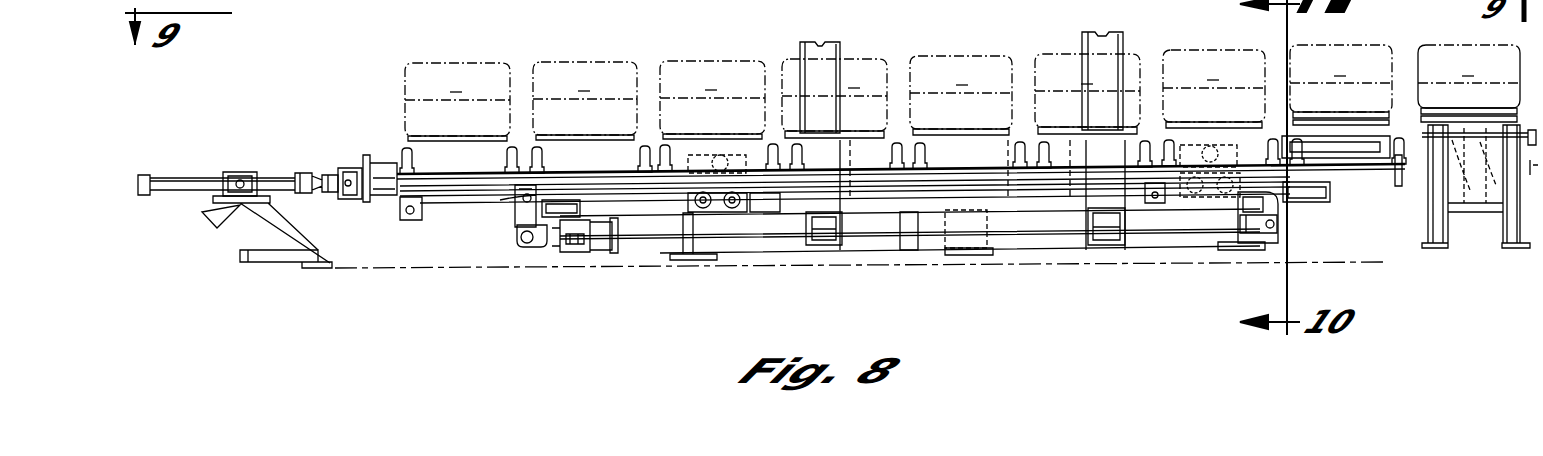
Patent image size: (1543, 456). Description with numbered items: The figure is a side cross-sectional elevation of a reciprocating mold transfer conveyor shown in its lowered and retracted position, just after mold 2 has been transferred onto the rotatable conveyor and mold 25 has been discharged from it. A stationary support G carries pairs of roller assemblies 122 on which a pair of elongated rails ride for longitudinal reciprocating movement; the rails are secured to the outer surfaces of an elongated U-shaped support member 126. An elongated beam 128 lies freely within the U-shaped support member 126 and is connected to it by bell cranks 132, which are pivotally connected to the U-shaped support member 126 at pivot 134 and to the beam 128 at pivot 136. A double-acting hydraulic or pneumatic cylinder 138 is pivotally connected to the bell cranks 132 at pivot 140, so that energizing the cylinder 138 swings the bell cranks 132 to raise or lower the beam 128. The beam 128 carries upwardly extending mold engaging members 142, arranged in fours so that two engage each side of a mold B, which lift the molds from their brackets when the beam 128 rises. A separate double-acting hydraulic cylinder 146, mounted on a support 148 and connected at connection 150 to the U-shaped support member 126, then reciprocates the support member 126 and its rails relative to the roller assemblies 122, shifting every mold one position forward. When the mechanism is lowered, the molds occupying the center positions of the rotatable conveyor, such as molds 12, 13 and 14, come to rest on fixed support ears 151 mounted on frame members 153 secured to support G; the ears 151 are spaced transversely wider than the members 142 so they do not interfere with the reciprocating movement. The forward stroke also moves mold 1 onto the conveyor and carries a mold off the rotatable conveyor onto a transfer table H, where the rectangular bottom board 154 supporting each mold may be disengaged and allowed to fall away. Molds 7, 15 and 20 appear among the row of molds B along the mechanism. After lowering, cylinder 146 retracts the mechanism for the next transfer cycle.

The mold 1 is at (431, 62).
The mold 2 is at (562, 61).
The work station 7 is at (716, 60).
The mold 12 is at (852, 60).
The mold 13 is at (962, 58).
The mold 14 is at (1072, 52).
The work station 15 is at (1206, 50).
The work station 20 is at (1355, 44).
The mold 25 is at (1467, 44).
The roller assemblies 122 is at (690, 200).
The U-shaped support member 126 is at (362, 153).
The elongated beam 128 is at (854, 182).
The bell cranks 132 is at (517, 226).
The pivotal connection 134 is at (514, 207).
The pivotal connection 136 is at (400, 214).
The double-acting cylinder 138 is at (600, 254).
The pivotal connection 140 is at (528, 256).
The mold engaging members 142 is at (516, 146).
The double-acting hydraulic cylinder 146 is at (195, 178).
The support 148 is at (266, 263).
The connection 150 is at (352, 168).
The fixed support ears 151 is at (774, 146).
The frame members 153 is at (818, 174).
The bottom board 154 is at (1322, 134).
The support G is at (995, 252).
The transfer table H is at (1470, 228).